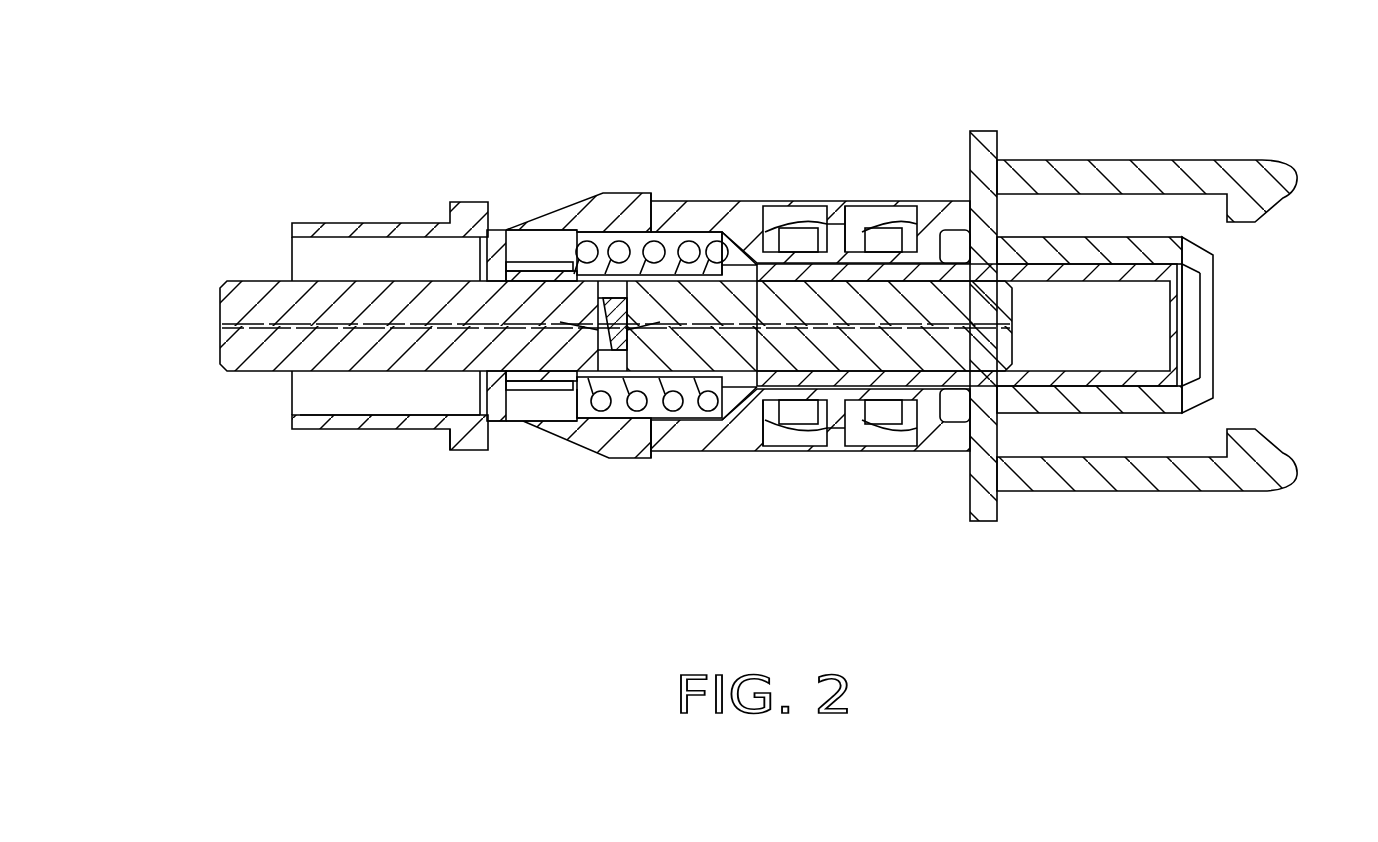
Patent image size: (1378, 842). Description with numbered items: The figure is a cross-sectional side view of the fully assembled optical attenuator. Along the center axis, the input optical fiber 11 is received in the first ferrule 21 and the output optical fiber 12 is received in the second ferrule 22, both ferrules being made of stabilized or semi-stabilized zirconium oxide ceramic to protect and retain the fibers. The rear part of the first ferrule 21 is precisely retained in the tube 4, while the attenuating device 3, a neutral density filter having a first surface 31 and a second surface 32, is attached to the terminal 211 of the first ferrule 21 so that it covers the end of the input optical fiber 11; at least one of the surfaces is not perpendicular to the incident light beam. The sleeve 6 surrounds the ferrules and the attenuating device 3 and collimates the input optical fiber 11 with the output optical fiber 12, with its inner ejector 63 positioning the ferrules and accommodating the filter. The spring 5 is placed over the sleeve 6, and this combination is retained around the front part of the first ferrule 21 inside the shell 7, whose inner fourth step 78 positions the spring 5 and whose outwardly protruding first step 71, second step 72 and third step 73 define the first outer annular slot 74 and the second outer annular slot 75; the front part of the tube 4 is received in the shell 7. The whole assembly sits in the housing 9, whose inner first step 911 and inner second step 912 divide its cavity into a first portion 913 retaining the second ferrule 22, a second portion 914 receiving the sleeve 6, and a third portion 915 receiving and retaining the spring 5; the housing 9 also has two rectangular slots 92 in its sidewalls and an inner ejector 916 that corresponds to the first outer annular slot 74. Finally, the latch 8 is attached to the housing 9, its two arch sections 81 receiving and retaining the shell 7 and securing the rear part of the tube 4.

The output optical fiber 12 is at (222, 323).
The second ferrule 22 is at (283, 343).
The first portion 913 is at (322, 398).
The inner first step 911 is at (425, 383).
The second portion 914 is at (523, 393).
The terminal 211 is at (533, 393).
The inner second step 912 is at (570, 393).
The housing 9 is at (627, 433).
The third portion 915 is at (667, 420).
The inner ejector 63 is at (588, 245).
The spring 5 is at (690, 215).
The attenuating device 3 is at (615, 300).
The first surface 31 is at (592, 310).
The second surface 32 is at (637, 300).
The sleeve 6 is at (600, 325).
The shell 7 is at (737, 410).
The inner fourth step 78 is at (730, 215).
The rectangular slots 92 is at (745, 205).
The first step 71 is at (782, 225).
The second step 72 is at (862, 215).
The third step 73 is at (928, 215).
The arch sections 81 is at (880, 222).
The inner ejector 916 is at (770, 410).
The first outer annular slot 74 is at (793, 423).
The second outer annular slot 75 is at (877, 423).
The latch 8 is at (970, 200).
The first ferrule 21 is at (977, 303).
The input optical fiber 11 is at (1013, 323).
The tube 4 is at (1213, 312).